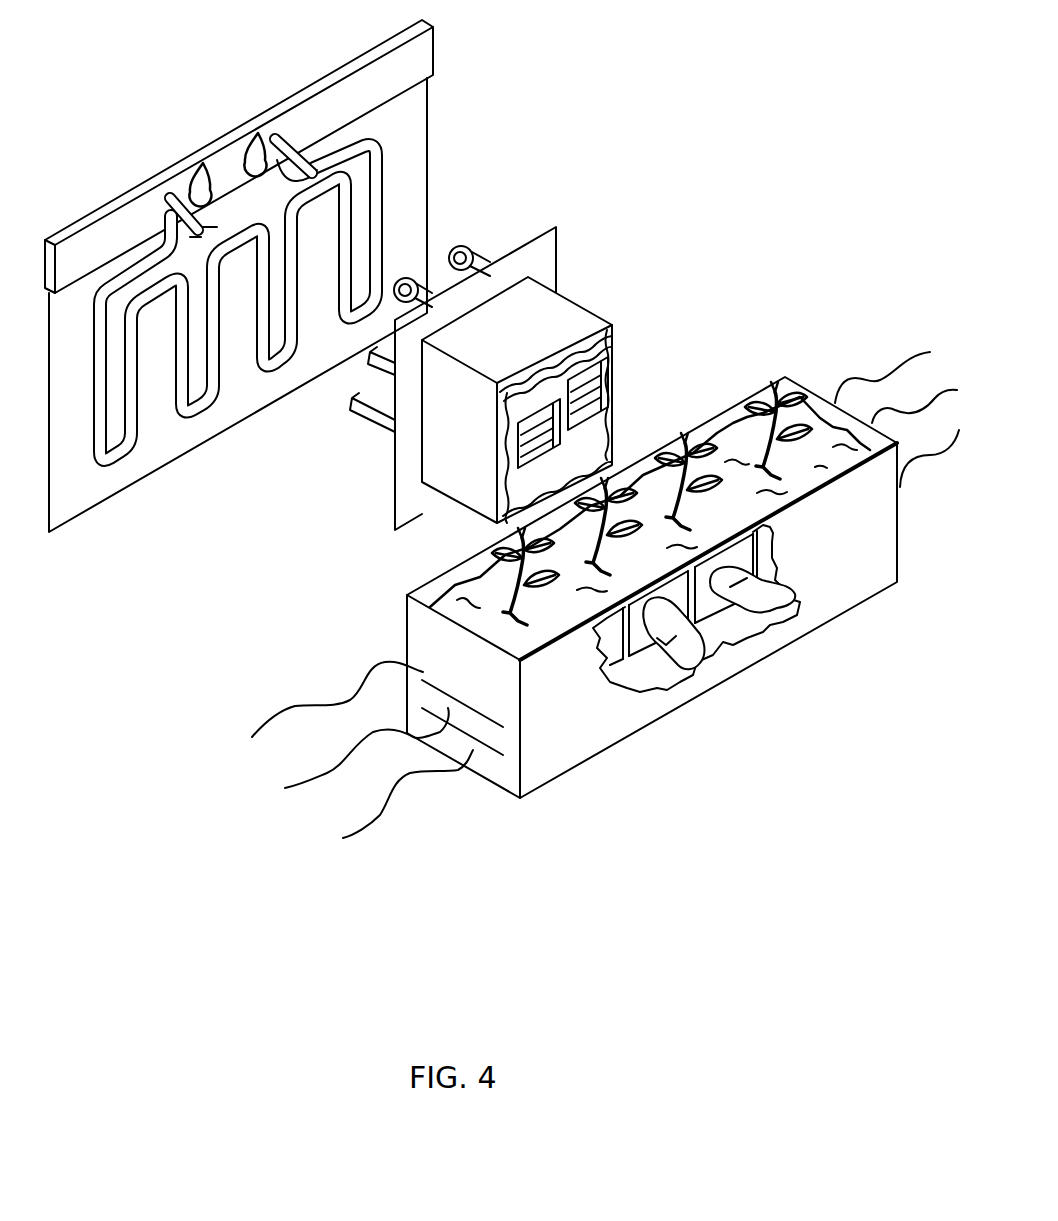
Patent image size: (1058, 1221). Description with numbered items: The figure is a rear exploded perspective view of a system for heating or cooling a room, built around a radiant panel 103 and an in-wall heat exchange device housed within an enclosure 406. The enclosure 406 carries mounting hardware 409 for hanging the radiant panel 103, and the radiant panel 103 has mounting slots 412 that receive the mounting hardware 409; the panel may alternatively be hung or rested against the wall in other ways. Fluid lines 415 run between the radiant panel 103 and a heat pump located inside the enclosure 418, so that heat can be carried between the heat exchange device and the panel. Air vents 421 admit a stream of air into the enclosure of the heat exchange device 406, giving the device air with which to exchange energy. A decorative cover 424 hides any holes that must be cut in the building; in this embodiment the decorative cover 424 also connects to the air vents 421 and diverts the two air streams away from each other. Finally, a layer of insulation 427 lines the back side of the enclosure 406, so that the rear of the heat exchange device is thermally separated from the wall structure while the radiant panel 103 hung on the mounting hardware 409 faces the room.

The radiant panel 103 is at (412, 113).
The mounting slots 412 is at (257, 133).
The mounting hardware 409 is at (465, 245).
The fluid lines 415 is at (372, 420).
The enclosure 406 is at (596, 320).
The layer of insulation 427 is at (607, 355).
The air vents 421 is at (618, 397).
The enclosure 418 is at (633, 720).
The decorative cover 424 is at (488, 550).